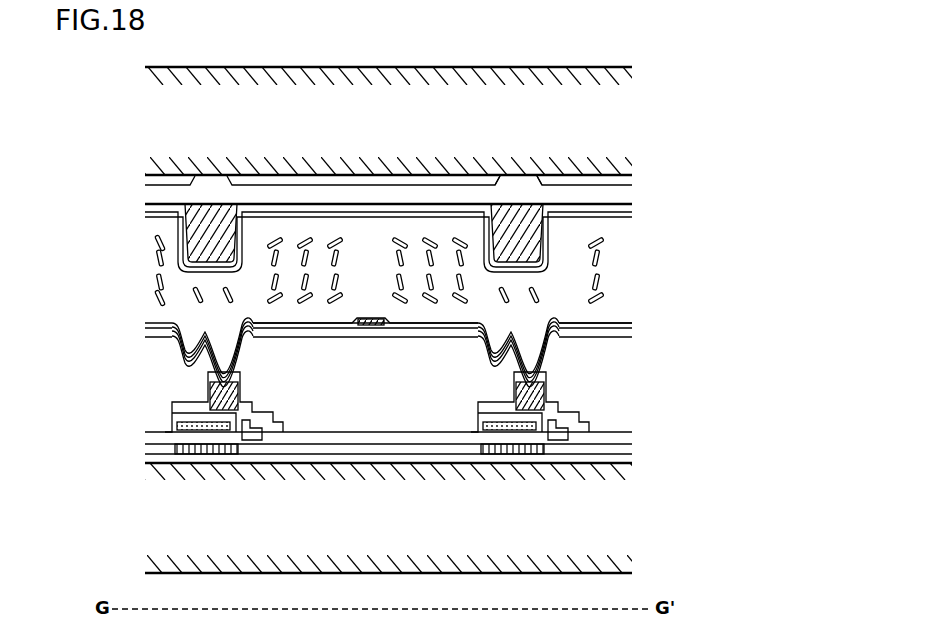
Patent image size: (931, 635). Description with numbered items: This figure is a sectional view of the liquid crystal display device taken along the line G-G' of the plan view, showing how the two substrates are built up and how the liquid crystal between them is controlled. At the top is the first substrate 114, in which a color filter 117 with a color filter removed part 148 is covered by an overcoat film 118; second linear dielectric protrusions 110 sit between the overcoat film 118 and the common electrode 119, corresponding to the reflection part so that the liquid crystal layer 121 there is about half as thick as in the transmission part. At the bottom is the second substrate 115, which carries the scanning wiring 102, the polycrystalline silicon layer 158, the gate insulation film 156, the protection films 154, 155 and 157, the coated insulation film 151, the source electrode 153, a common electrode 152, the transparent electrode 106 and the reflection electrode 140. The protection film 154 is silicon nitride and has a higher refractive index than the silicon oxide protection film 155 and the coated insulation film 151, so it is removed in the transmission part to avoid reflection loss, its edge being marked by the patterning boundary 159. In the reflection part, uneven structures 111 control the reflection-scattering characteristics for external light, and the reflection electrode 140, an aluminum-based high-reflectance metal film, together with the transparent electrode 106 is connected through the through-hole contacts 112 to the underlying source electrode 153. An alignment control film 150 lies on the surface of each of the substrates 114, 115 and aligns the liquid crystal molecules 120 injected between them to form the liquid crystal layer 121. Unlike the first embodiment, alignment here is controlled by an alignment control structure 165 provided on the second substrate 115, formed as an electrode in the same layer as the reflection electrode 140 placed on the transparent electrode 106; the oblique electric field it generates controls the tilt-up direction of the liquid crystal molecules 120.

The first substrate 114 is at (584, 121).
The color filter 117 is at (458, 178).
The color filter removed part 148 is at (518, 178).
The overcoat film 118 is at (620, 194).
The common electrode 119 is at (145, 205).
The alignment control film 150 is at (145, 213).
The second linear dielectric protrusion 110 is at (530, 228).
The liquid crystal molecules 120 is at (157, 258).
The liquid crystal layer 121 is at (625, 283).
The uneven structures 111 is at (170, 318).
The reflection electrode 140 is at (148, 328).
The transparent electrode 106 is at (632, 330).
The alignment control structure 165 is at (377, 327).
The coated insulation film 151 is at (360, 413).
The source electrode 153 is at (585, 375).
The protection film 154 is at (590, 400).
The through-hole contacts 112 is at (218, 410).
The common electrode 152 is at (175, 430).
The patterning boundary 159 is at (284, 430).
The scanning wiring 102 is at (553, 440).
The protection film 155 is at (620, 440).
The gate insulation film 156 is at (622, 450).
The protection film 157 is at (625, 460).
The polycrystalline silicon layer 158 is at (152, 464).
The second substrate 115 is at (590, 535).